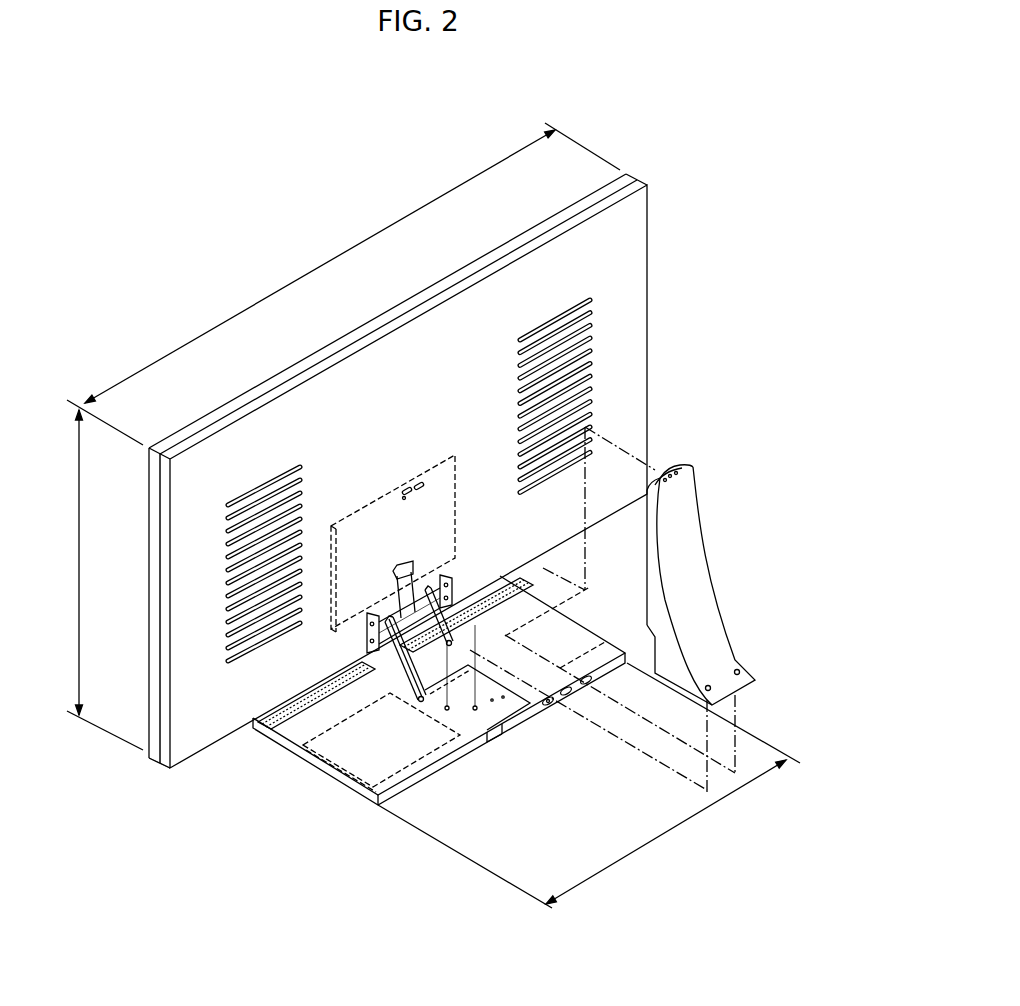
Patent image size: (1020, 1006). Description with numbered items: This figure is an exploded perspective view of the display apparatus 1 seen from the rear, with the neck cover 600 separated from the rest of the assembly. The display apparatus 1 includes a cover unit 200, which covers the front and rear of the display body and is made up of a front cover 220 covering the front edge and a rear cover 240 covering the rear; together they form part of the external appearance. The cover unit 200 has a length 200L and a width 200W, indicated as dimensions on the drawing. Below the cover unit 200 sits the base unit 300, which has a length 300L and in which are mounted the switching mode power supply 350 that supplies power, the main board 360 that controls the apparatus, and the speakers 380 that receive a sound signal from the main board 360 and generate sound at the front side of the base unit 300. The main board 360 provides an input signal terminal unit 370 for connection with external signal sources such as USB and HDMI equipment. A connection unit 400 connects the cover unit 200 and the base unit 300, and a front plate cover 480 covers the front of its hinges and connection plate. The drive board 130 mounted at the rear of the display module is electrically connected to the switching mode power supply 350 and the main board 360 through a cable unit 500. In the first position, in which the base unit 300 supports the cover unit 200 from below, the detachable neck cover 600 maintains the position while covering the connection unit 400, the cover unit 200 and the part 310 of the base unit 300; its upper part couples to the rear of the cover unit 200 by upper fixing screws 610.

The display apparatus 1 is at (607, 108).
The drive board 130 is at (343, 613).
The cover unit 200 is at (660, 282).
The length of cover unit 200L is at (343, 284).
The width of cover unit 200W is at (88, 580).
The front cover 220 is at (155, 662).
The rear cover 240 is at (178, 733).
The base unit 300 is at (478, 775).
The length of base unit 300L is at (589, 785).
The part of base unit 310 is at (495, 720).
The switching mode power supply 350 is at (383, 768).
The main board 360 is at (558, 662).
The input signal terminal unit 370 is at (553, 702).
The speakers 380 is at (258, 727).
The connection unit 400 is at (390, 672).
The front plate cover 480 is at (445, 632).
The cable unit 500 is at (420, 587).
The neck cover 600 is at (695, 592).
The upper fixing screws 610 is at (418, 485).